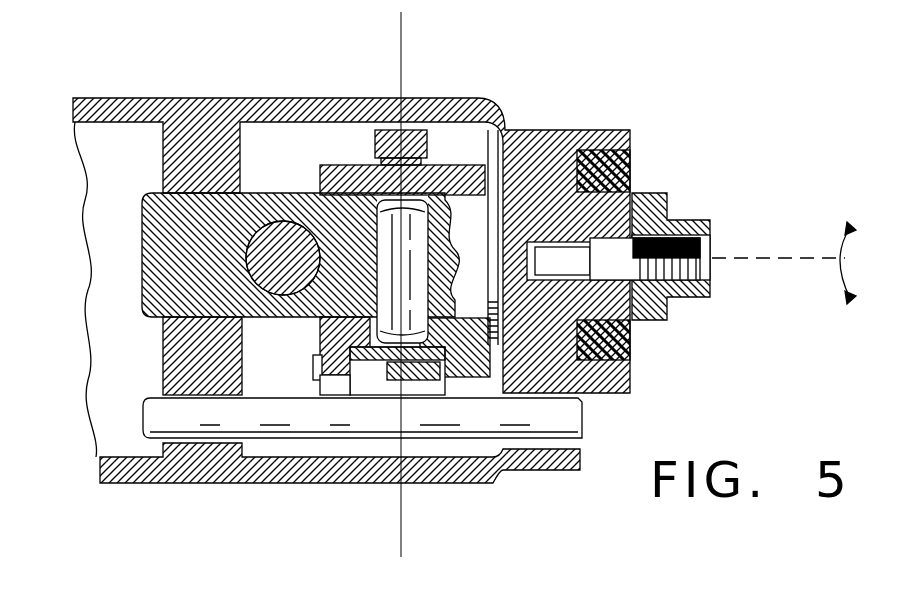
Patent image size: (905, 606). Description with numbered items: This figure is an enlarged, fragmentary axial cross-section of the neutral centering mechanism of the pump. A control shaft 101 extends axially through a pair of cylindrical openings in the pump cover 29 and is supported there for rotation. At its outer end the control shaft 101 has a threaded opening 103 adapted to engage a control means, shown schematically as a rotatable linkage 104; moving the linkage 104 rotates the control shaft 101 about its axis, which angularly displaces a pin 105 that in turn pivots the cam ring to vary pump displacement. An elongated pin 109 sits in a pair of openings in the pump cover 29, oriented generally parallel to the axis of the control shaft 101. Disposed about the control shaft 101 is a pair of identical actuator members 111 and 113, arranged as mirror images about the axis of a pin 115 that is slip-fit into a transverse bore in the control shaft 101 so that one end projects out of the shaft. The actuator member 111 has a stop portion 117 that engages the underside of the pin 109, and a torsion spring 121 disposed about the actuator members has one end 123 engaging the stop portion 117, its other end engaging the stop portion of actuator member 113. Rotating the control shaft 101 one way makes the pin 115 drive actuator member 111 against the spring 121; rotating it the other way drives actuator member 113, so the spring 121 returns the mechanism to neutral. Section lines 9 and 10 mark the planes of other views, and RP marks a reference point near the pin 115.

The pump cover 29 is at (207, 127).
The section line 10- 10 is at (396, 62).
The section line 9- 9 is at (408, 30).
The torsion spring 121 is at (410, 135).
The actuator member 113 is at (498, 110).
The actuator member 111 is at (320, 185).
The pin 105 is at (248, 258).
The control shaft 101 is at (150, 275).
The pin 115 is at (387, 247).
The reference point RP is at (412, 285).
The end of torsion spring 123 is at (313, 370).
The stop portion 117 is at (335, 388).
The elongated pin 109 is at (507, 423).
The rotatable linkage 104 is at (787, 252).
The threaded opening 103 is at (707, 273).